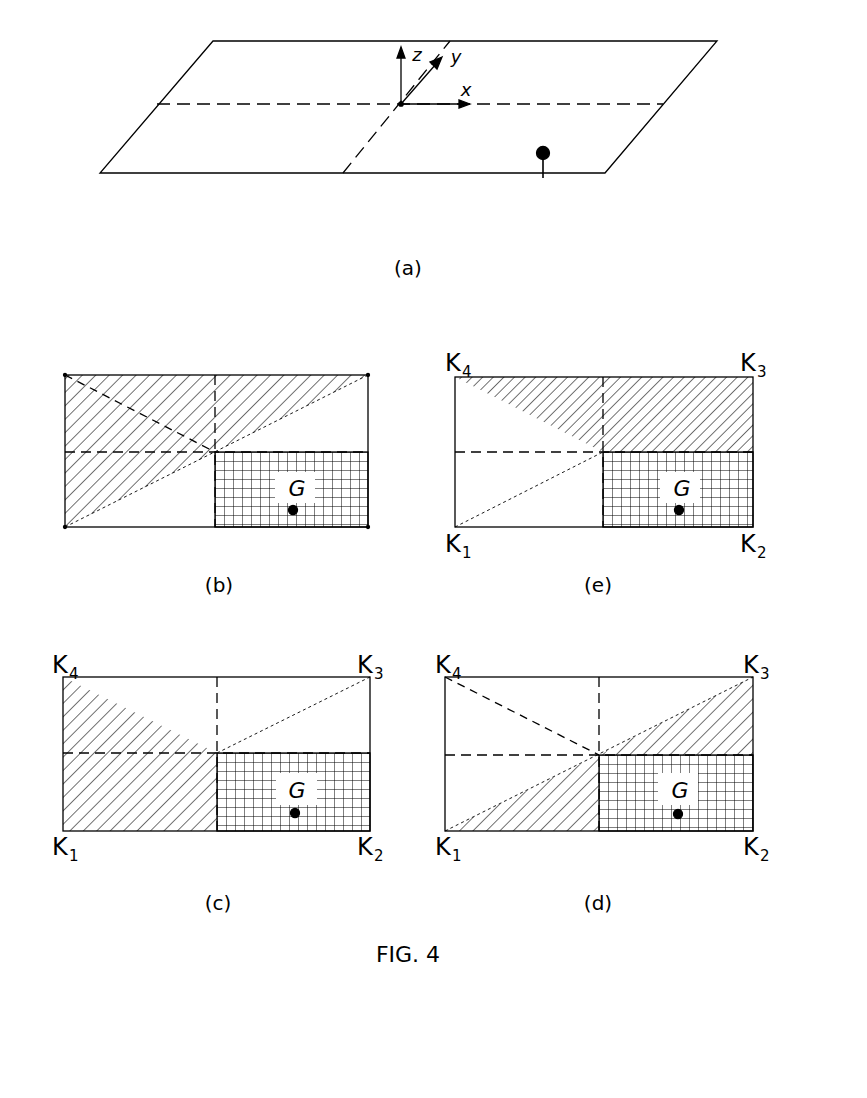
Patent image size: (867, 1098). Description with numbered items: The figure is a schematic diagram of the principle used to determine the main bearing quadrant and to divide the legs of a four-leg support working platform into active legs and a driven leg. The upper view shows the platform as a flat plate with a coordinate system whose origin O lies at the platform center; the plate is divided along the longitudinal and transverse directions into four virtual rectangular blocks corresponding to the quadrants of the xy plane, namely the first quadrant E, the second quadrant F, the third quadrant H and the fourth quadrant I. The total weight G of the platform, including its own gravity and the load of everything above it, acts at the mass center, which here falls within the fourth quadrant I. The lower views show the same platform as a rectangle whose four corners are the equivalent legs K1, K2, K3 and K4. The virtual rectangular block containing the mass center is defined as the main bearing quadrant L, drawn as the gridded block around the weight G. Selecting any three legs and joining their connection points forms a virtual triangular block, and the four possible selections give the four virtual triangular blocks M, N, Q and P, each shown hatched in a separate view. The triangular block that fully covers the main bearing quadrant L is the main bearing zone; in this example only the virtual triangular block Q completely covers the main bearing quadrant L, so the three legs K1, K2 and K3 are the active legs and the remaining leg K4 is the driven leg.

The origin of the coordinate system O is at (423, 77).
The second quadrant F is at (262, 83).
The first quadrant E is at (537, 83).
The third quadrant H is at (237, 142).
The fourth quadrant I is at (503, 142).
The total weight of the four-leg support working platform G is at (557, 178).
The virtual triangular block M is at (160, 405).
The main bearing quadrant L is at (338, 488).
The virtual triangular block P is at (605, 420).
The virtual triangular block N is at (82, 735).
The virtual triangular block Q is at (507, 815).
The leg equivalent K1 is at (66, 544).
The leg equivalent K2 is at (368, 544).
The leg equivalent K3 is at (368, 365).
The leg equivalent K4 is at (66, 365).